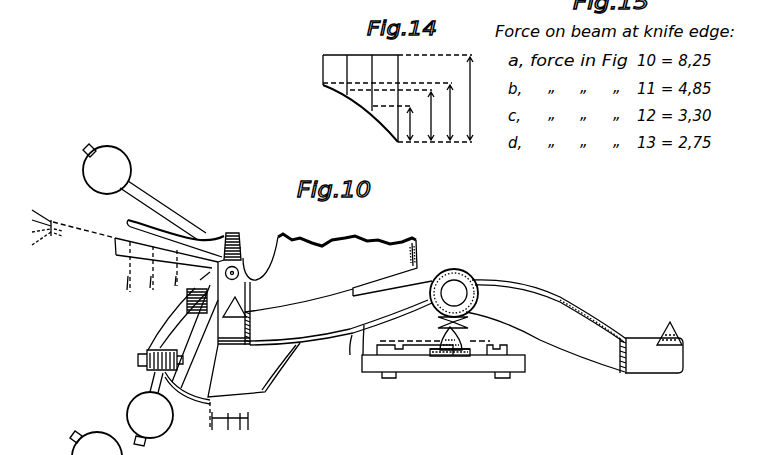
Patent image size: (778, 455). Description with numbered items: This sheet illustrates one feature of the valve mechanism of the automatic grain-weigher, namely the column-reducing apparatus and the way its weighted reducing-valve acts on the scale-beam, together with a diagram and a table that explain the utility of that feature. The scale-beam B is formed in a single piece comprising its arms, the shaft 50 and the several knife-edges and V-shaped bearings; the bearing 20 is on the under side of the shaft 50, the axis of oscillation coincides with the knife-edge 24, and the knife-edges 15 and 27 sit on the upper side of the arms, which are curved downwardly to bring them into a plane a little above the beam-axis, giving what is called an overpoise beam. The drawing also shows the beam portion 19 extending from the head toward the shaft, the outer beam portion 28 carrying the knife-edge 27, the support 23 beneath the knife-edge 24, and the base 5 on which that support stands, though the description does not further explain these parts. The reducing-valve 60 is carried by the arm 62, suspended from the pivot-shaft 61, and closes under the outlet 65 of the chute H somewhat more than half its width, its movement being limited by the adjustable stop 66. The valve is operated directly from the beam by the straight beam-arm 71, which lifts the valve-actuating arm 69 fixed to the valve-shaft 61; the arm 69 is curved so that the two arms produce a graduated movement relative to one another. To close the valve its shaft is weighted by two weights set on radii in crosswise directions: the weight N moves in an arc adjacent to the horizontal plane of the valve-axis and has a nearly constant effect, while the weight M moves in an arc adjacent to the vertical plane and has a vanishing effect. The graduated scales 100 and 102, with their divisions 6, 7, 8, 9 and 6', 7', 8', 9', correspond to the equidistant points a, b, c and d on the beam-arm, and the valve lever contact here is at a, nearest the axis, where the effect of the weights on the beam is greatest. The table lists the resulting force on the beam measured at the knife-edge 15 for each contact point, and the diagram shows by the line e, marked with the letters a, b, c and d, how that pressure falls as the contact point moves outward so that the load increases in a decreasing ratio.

In FIG. 10, the base plate 5 is at (513, 366).
In FIG. 10, the knife-edge 15 is at (246, 312).
In FIG. 10, the beam 19 is at (338, 313).
In FIG. 10, the bearing 20 is at (466, 318).
In FIG. 10, the knife edge support 23 is at (447, 358).
In FIG. 10, the knife-edge 24 is at (461, 340).
In FIG. 10, the knife-edge 27 is at (672, 335).
In FIG. 10, the beam end portion 28 is at (593, 330).
In FIG. 10, the shaft 50 is at (454, 269).
In FIG. 10, the reducing-valve 60 is at (196, 400).
In FIG. 10, the pivot-shaft 61 is at (238, 265).
In FIG. 10, the arm 62 is at (175, 333).
In FIG. 10, the outlet 65 is at (262, 372).
In FIG. 10, the adjustable stop 66 is at (142, 355).
In FIG. 10, the valve-actuating arm 69 is at (165, 238).
In FIG. 10, the beam-arm 71 is at (125, 246).
In FIG. 10, the graduated scale 100 is at (45, 243).
In FIG. 10, the graduated scale 102 is at (250, 414).
In FIG. 10, the division 6 is at (34, 212).
In FIG. 10, the division 7 is at (34, 219).
In FIG. 10, the division 8 is at (38, 232).
In FIG. 10, the division 9 is at (38, 242).
In FIG. 10, the division 6' is at (206, 436).
In FIG. 10, the division 7' is at (222, 436).
In FIG. 10, the division 8' is at (238, 436).
In FIG. 10, the division 9' is at (254, 436).
In FIG. 14, the point on the beam-arm a is at (436, 98).
In FIG. 10, the point on the beam-arm a is at (200, 280).
In FIG. 14, the point on the beam-arm b is at (389, 111).
In FIG. 10, the point on the beam-arm b is at (174, 285).
In FIG. 14, the point on the beam-arm c is at (392, 115).
In FIG. 10, the point on the beam-arm c is at (149, 286).
In FIG. 14, the point on the beam-arm d is at (393, 123).
In FIG. 10, the point on the beam-arm d is at (125, 284).
In FIG. 14, the line e is at (365, 101).
In FIG. 10, the scale-beam B is at (492, 281).
In FIG. 10, the chute H is at (352, 246).
In FIG. 10, the weight M is at (150, 409).
In FIG. 10, the weight N is at (107, 150).